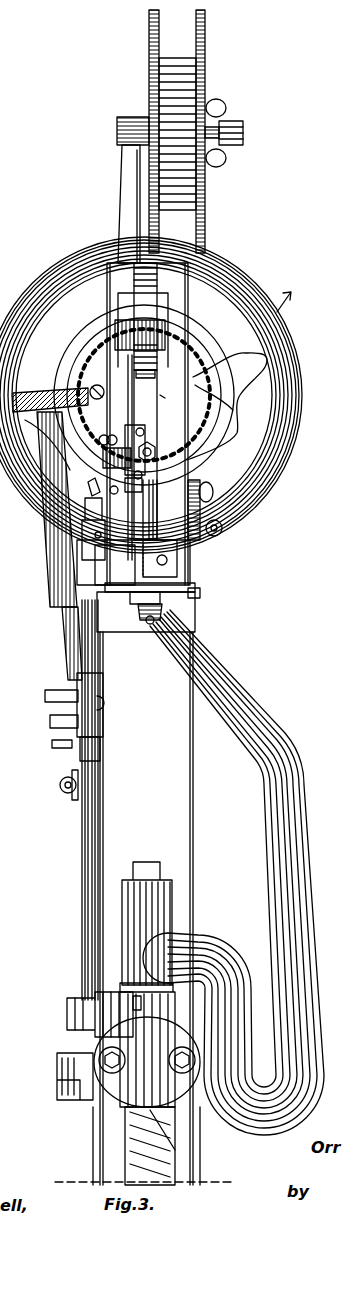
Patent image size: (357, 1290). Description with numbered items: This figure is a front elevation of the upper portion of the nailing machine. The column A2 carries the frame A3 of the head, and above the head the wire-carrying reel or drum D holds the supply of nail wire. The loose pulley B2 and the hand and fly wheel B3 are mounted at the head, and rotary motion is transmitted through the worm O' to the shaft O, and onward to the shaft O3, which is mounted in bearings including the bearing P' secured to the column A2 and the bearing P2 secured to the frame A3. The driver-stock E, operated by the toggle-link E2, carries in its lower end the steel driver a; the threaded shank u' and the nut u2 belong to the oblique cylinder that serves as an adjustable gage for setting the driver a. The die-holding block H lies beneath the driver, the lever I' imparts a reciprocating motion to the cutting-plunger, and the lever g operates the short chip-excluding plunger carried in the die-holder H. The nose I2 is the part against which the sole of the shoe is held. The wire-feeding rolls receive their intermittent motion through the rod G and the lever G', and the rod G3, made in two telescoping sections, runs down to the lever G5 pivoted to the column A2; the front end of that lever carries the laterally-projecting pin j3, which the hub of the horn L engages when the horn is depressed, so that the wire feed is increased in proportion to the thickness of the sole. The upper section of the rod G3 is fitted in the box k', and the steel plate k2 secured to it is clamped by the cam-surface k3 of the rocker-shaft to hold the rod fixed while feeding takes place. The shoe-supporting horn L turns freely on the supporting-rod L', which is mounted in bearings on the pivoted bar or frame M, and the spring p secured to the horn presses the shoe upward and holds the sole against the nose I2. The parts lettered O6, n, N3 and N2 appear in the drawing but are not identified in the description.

The wire-carrying reel or drum D is at (180, 136).
The hand and fly wheel B3 is at (300, 347).
The loose pulley B2 is at (212, 342).
The frame of the head A3 is at (160, 419).
The driver-stock E is at (141, 411).
The toggle-link E2 is at (155, 376).
The lever I' is at (174, 398).
The worm O' is at (227, 406).
The shaft O is at (50, 422).
The pivot screw O6 is at (108, 386).
The bearing P2 is at (50, 513).
The shaft O3 is at (68, 646).
The lever G' is at (122, 445).
The nut u2 is at (152, 441).
The threaded shank u' is at (158, 452).
The lever g is at (118, 525).
The rod G is at (97, 514).
The steel driver a is at (153, 510).
The die-holding block H is at (115, 565).
The nose I2 is at (146, 610).
The nut n is at (143, 609).
The spring p is at (162, 609).
The column A2 is at (145, 908).
The shoe-supporting horn L is at (233, 872).
The rod G3 is at (92, 655).
The box k' is at (90, 717).
The steel plate k2 is at (104, 704).
The steel cam-surface k3 is at (59, 726).
The bearing P' is at (52, 742).
The lever G5 is at (95, 1001).
The laterally-projecting pin j3 is at (143, 1000).
The clamp N3 is at (85, 1053).
The clamp bracket N2 is at (68, 1081).
The supporting-rod L' is at (116, 1139).
The pivoted bar or frame M is at (178, 1151).